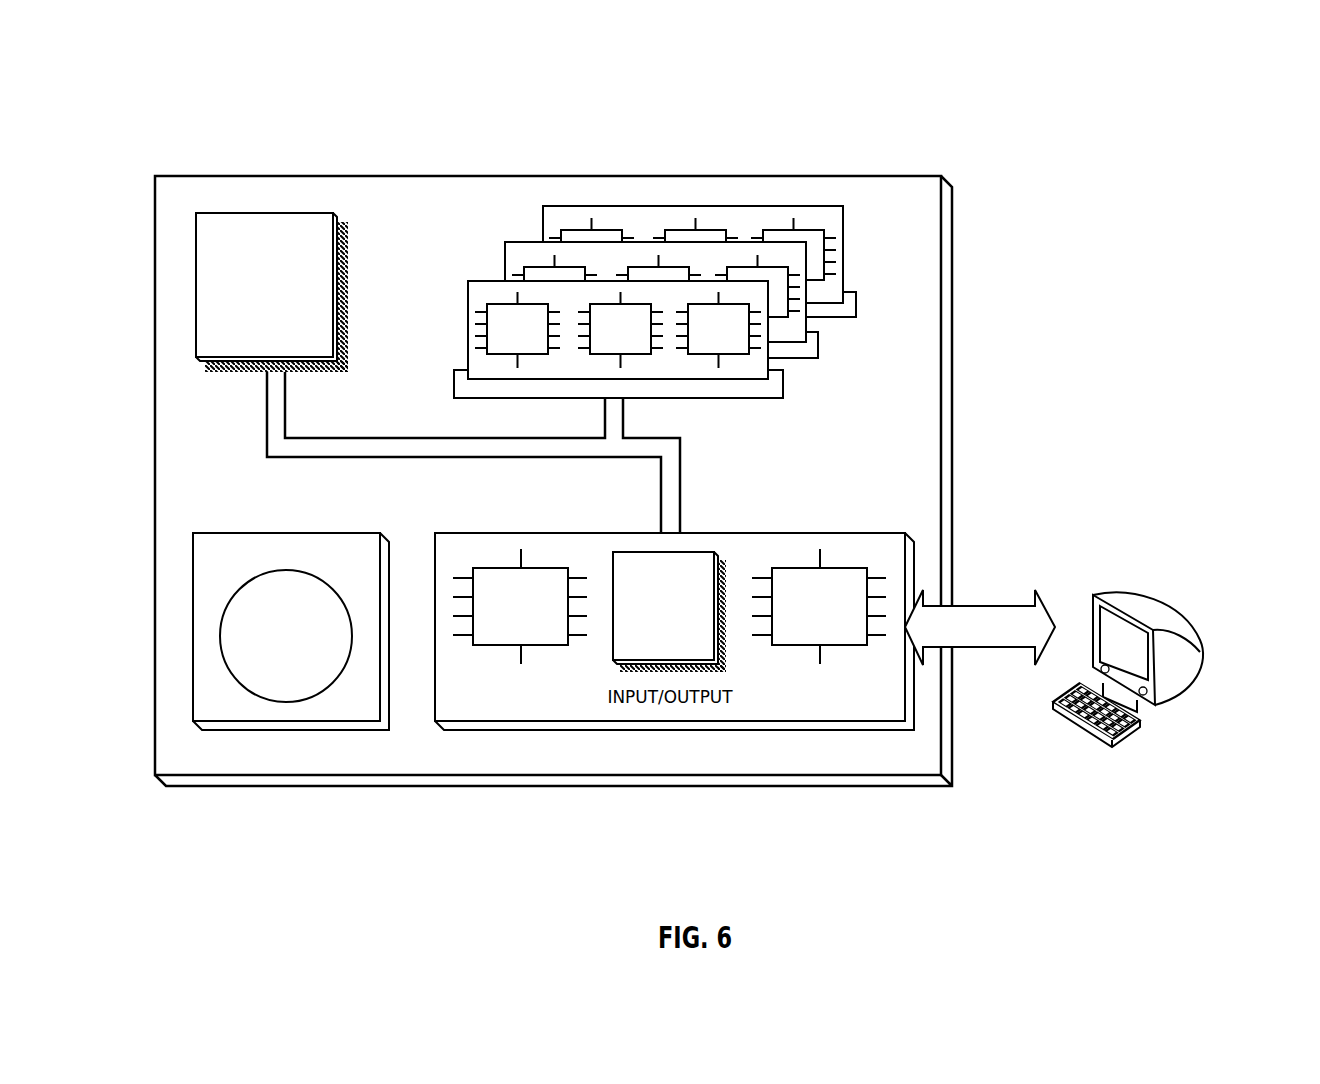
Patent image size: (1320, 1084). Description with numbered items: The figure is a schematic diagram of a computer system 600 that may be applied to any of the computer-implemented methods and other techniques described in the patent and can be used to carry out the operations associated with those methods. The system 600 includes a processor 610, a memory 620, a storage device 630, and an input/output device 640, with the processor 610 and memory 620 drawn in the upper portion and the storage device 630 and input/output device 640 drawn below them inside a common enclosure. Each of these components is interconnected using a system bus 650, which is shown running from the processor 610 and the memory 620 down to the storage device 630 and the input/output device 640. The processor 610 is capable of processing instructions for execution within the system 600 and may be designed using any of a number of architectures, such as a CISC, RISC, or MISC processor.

The computer system 600 is at (181, 82).
The processor 610 is at (316, 347).
The memory 620 is at (836, 335).
The storage device 630 is at (371, 712).
The input/output device 640 is at (1097, 594).
The system bus 650 is at (432, 449).